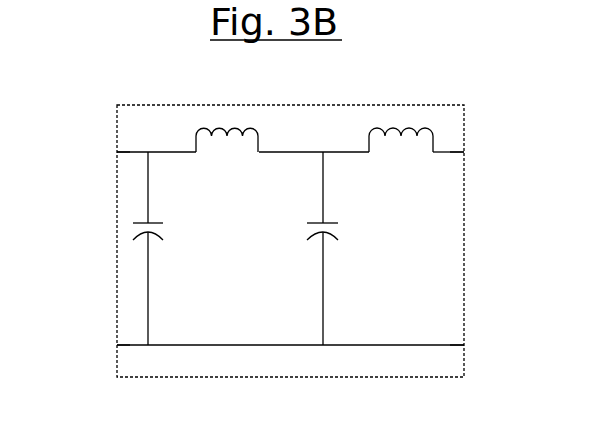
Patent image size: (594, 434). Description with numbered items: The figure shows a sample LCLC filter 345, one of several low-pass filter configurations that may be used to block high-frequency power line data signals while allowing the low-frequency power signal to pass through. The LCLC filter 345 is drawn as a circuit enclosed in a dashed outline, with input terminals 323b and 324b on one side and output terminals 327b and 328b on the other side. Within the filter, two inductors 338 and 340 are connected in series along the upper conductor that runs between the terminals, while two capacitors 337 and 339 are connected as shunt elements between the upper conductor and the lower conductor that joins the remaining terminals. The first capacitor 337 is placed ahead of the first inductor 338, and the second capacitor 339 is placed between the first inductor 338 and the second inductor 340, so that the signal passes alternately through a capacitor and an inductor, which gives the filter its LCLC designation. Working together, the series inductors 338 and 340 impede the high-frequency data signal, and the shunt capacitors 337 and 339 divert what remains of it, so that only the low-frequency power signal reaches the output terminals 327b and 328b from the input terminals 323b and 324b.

The LCLC filter 345 is at (307, 98).
The output terminal 327b is at (100, 168).
The input terminal 323b is at (472, 152).
The output terminal 328b is at (110, 340).
The input terminal 324b is at (470, 345).
The inductor 338 is at (227, 152).
The inductor 340 is at (402, 152).
The capacitor 337 is at (164, 230).
The capacitor 339 is at (338, 230).